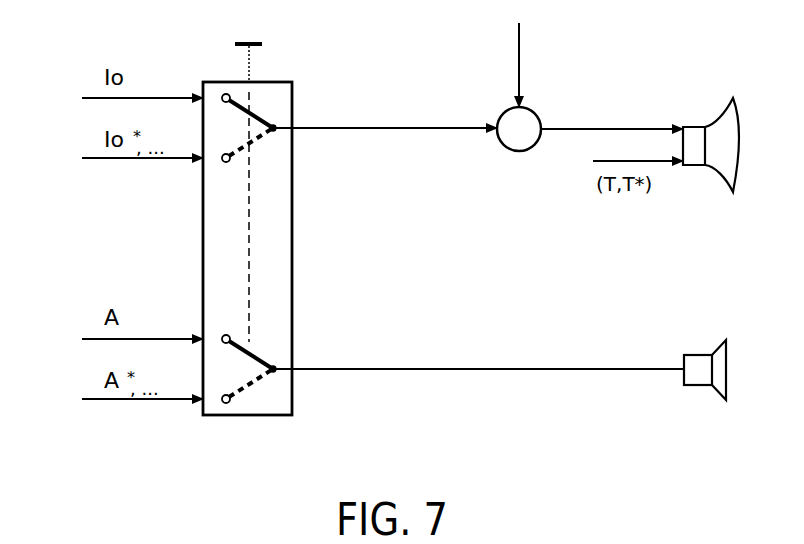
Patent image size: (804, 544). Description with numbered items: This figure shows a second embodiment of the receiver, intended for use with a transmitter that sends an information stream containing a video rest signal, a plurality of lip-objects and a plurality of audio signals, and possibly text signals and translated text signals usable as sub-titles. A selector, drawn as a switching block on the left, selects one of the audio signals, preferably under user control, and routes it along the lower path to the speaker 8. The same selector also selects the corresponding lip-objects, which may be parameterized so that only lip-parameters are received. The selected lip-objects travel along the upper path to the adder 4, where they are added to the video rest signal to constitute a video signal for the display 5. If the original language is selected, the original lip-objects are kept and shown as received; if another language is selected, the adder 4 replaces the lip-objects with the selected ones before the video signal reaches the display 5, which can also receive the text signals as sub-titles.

The adder 4 is at (519, 151).
The display 5 is at (708, 118).
The speaker 8 is at (700, 355).